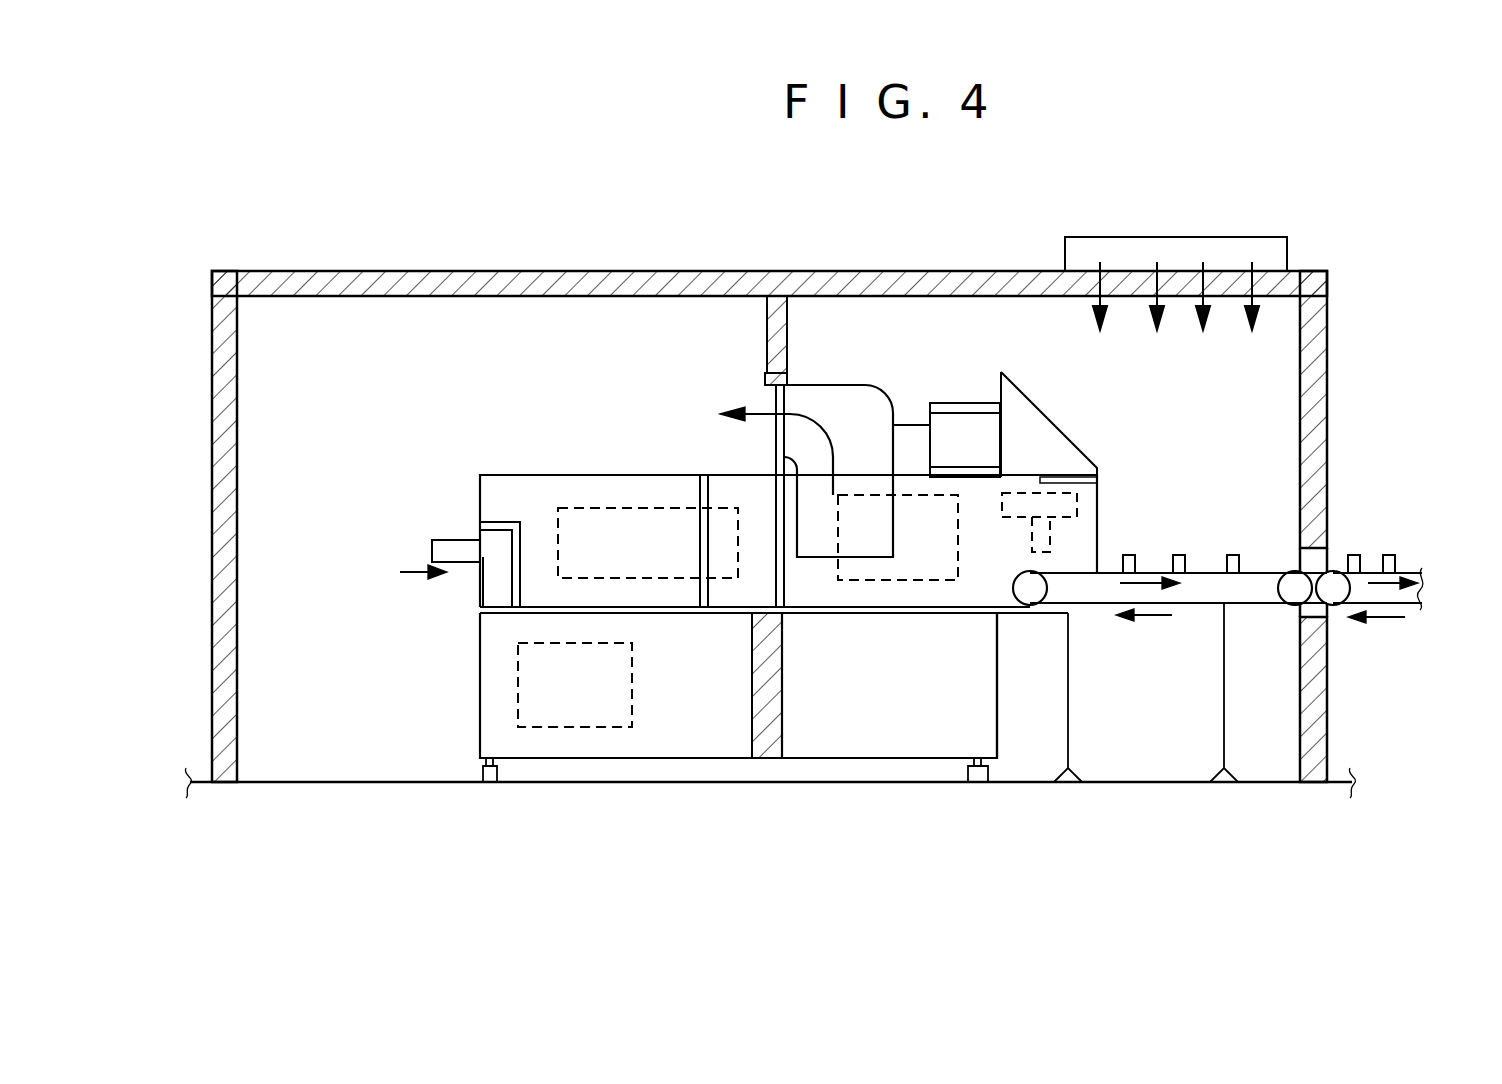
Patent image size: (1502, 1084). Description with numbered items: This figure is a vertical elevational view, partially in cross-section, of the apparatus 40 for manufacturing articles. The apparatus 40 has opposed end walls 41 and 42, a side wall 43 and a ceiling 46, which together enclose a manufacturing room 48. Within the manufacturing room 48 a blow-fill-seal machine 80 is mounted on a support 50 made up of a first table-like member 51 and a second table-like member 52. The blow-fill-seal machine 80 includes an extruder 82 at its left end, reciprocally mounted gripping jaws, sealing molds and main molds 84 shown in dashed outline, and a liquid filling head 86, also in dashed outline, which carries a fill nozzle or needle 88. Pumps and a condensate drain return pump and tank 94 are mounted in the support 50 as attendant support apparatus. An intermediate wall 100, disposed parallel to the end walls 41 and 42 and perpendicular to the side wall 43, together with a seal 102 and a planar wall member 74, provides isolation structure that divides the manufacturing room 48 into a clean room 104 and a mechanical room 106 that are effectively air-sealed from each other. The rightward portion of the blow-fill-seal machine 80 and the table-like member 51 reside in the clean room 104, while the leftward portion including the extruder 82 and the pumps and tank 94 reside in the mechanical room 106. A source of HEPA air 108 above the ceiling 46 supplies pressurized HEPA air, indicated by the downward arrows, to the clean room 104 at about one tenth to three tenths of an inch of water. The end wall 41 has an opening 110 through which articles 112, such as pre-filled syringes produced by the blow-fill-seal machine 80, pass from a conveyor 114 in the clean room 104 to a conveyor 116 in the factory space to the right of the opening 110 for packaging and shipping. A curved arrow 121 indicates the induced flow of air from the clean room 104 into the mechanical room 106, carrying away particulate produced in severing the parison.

The apparatus 40 is at (506, 250).
The end wall 41 is at (1328, 420).
The end wall 42 is at (212, 365).
The side wall 43 is at (492, 383).
The ceiling 46 is at (663, 277).
The manufacturing room 48 is at (303, 355).
The support 50 is at (680, 784).
The first table-like member 51 is at (933, 760).
The second table-like member 52 is at (565, 782).
The planar wall member 74 is at (775, 460).
The blow-fill-seal machine 80 is at (588, 450).
The extruder 82 is at (670, 585).
The gripping jaws, sealing molds and main molds 84 is at (958, 505).
The liquid filling head 86 is at (1077, 500).
The fill nozzle 88 is at (1050, 542).
The pumps and condensate drain return pump and tank 94 is at (518, 700).
The intermediate wall 100 is at (787, 327).
The seal 102 is at (800, 383).
The clean room 104 is at (1267, 342).
The mechanical room 106 is at (372, 410).
The source of HEPA air 108 is at (1192, 240).
The opening 110 is at (1338, 548).
The article 112 is at (1180, 555).
The conveyor 114 is at (1255, 603).
The conveyor 116 is at (1418, 617).
The curved arrow 121 is at (758, 408).